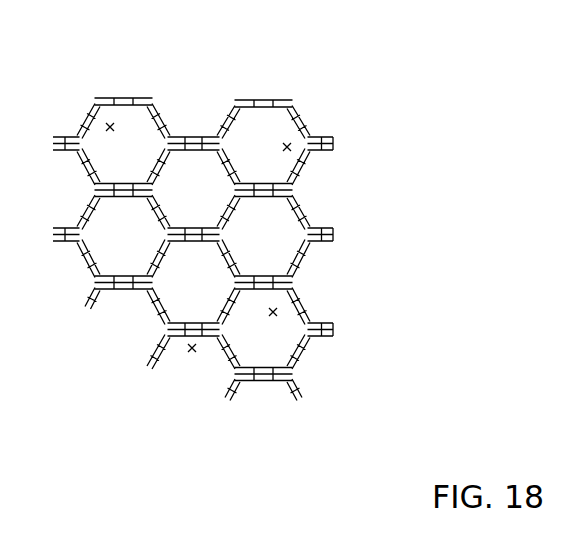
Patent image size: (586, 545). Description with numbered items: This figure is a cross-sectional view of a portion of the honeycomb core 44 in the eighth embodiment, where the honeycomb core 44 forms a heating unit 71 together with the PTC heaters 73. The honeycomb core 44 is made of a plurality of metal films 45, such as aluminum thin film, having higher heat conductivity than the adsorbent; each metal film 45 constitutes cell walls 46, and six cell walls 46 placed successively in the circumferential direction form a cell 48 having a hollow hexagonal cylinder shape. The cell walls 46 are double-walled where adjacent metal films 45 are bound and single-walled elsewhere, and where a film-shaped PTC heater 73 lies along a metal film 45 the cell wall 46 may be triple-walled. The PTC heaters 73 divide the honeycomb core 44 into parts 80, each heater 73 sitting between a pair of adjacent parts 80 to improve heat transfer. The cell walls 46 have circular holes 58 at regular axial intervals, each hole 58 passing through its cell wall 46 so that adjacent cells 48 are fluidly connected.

The honeycomb core 44 is at (240, 93).
The metal film 45 is at (72, 128).
The cell wall 46 is at (284, 98).
The cell 48 is at (110, 125).
The hole 58 is at (127, 97).
The heating unit 71 is at (344, 73).
The PTC heater 73 is at (300, 188).
The part 80 is at (311, 167).